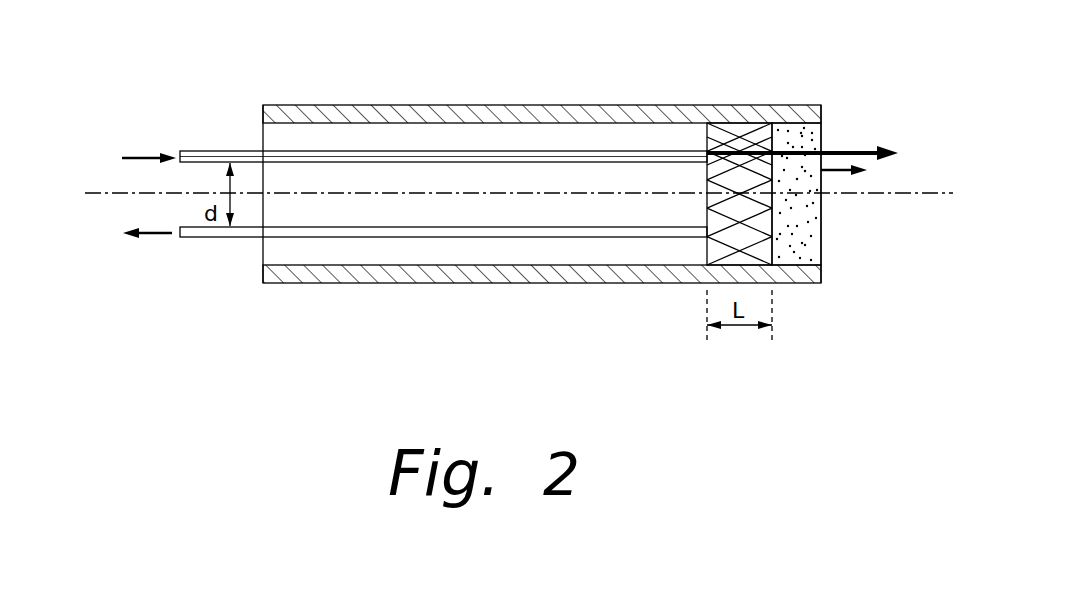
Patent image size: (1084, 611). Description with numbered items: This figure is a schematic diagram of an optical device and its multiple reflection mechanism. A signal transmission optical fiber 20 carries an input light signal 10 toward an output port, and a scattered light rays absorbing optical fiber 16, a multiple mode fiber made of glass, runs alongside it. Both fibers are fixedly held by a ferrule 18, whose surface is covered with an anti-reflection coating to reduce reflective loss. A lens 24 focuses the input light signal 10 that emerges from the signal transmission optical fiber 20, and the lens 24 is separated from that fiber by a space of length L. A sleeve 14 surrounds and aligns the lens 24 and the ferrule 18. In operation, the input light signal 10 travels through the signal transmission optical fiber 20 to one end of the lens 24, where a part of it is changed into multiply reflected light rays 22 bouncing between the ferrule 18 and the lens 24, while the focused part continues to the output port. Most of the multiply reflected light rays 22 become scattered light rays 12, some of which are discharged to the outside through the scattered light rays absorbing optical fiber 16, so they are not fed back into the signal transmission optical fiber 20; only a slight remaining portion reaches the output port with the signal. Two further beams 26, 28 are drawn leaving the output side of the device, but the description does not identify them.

The input light signal 10 is at (140, 153).
The scattered light rays 12 is at (160, 237).
The sleeve 14 is at (418, 268).
The scattered light rays absorbing optical fiber 16 is at (582, 227).
The ferrule 18 is at (595, 142).
The signal transmission optical fiber 20 is at (640, 158).
The multiply reflected light rays 22 is at (742, 132).
The lens 24 is at (798, 130).
The output light beam 26 is at (858, 150).
The reflected light beam 28 is at (837, 173).